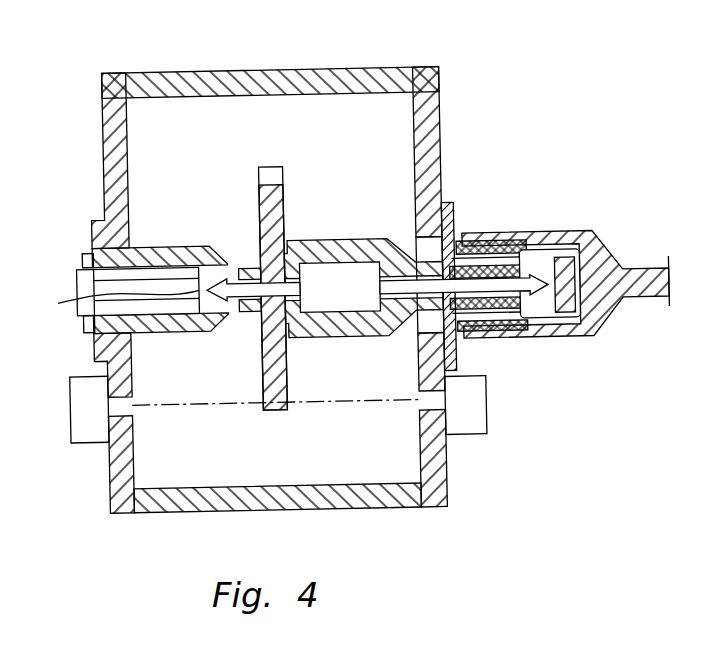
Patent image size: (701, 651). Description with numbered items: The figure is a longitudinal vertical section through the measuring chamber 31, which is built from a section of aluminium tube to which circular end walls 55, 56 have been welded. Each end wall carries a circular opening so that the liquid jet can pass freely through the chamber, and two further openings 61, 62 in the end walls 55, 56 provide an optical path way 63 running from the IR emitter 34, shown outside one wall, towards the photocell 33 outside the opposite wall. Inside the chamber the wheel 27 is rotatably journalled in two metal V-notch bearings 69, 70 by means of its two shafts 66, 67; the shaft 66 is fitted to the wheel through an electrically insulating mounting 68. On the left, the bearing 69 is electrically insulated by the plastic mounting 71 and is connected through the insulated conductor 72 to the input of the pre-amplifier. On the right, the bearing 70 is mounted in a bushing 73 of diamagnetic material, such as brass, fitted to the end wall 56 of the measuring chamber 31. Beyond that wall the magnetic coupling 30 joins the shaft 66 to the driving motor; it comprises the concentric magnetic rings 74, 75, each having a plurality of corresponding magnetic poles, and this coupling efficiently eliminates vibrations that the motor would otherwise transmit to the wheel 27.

The measuring chamber 31 is at (363, 57).
The end wall 55 is at (122, 149).
The end wall 56 is at (425, 147).
The opening 61 is at (125, 410).
The opening 62 is at (430, 403).
The optical path way 63 is at (228, 406).
The photocell 33 is at (85, 423).
The IR emitter 34 is at (473, 418).
The plastic mounting 71 is at (166, 252).
The V-notch bearing 69 is at (206, 310).
The insulated conductor 72 is at (77, 294).
The wheel 27 is at (285, 198).
The electrically insulating mounting 68 is at (336, 242).
The shaft 67 is at (230, 283).
The shaft 66 is at (393, 287).
The magnetic coupling 30 is at (508, 218).
The V-notch bearing 70 is at (552, 316).
The bushing 73 is at (545, 252).
The magnetic ring 74 is at (478, 330).
The magnetic ring 75 is at (524, 322).